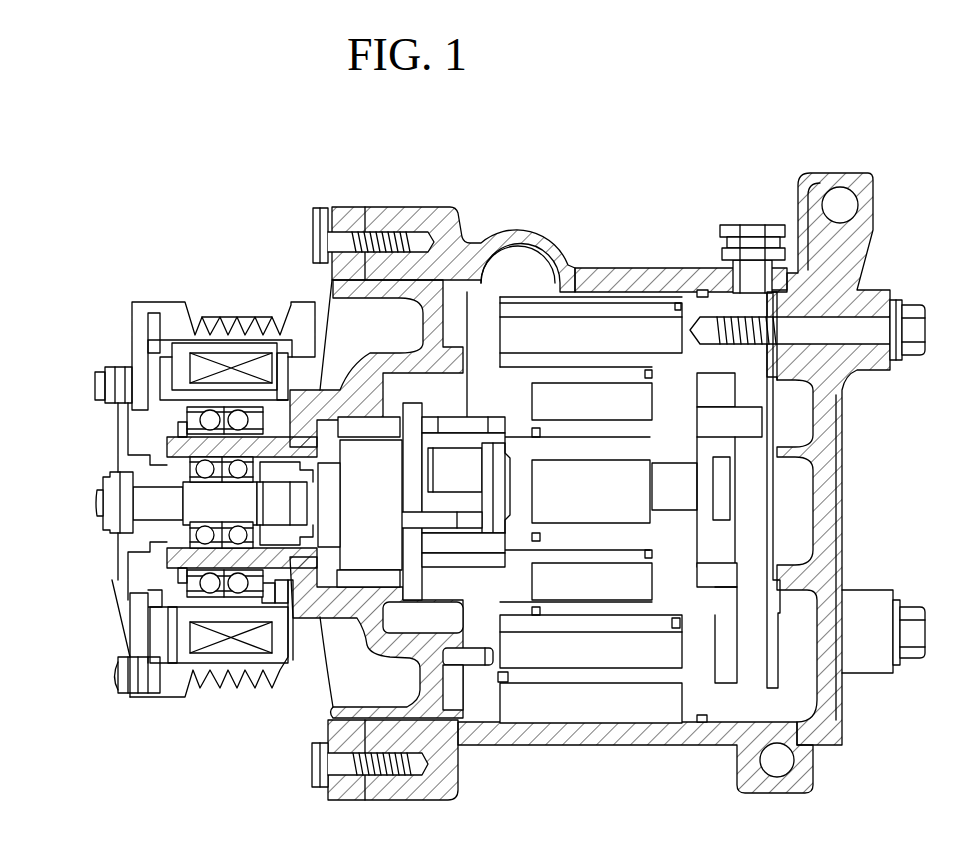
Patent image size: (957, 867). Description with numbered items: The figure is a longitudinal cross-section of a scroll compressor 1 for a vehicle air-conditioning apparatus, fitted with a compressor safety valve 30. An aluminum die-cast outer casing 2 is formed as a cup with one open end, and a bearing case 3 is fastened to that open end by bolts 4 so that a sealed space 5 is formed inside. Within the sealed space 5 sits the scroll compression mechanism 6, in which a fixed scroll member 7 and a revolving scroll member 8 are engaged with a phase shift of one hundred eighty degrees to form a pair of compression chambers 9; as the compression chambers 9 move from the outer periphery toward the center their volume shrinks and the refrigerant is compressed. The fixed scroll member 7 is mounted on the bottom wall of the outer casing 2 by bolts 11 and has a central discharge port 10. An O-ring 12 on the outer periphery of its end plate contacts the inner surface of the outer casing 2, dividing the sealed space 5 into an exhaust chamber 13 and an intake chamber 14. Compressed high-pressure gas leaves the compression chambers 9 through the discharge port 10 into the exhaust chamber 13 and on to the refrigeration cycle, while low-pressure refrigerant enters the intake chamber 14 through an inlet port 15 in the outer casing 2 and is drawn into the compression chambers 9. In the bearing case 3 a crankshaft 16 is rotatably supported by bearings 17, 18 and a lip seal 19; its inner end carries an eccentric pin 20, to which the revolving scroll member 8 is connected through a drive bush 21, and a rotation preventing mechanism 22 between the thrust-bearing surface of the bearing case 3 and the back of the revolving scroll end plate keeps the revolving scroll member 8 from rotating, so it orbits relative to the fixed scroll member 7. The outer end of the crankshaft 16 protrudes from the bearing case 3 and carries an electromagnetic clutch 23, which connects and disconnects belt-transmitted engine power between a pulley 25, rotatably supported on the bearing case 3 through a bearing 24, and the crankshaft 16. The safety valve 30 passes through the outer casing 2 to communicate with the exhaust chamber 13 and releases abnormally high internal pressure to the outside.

The scroll compressor 1 is at (592, 156).
The outer casing 2 is at (610, 735).
The bearing case 3 is at (340, 392).
The bolts 4 is at (318, 222).
The sealed space 5 is at (547, 707).
The scroll compression mechanism 6 is at (650, 686).
The fixed scroll member 7 is at (673, 552).
The revolving scroll member 8 is at (512, 360).
The compression chambers 9 is at (598, 418).
The discharge port 10 is at (683, 480).
The bolts 11 is at (918, 305).
The O-ring 12 is at (702, 290).
The exhaust chamber 13 is at (760, 500).
The intake chamber 14 is at (632, 290).
The inlet port 15 is at (510, 258).
The crankshaft 16 is at (300, 513).
The bearing 17 is at (367, 582).
The bearing 18 is at (195, 533).
The lip seal 19 is at (280, 462).
The eccentric pin 20 is at (443, 473).
The drive bush 21 is at (467, 535).
The rotation preventing mechanism 22 is at (477, 663).
The electromagnetic clutch 23 is at (138, 330).
The bearing 24 is at (210, 420).
The pulley 25 is at (232, 323).
The safety valve 30 is at (754, 230).